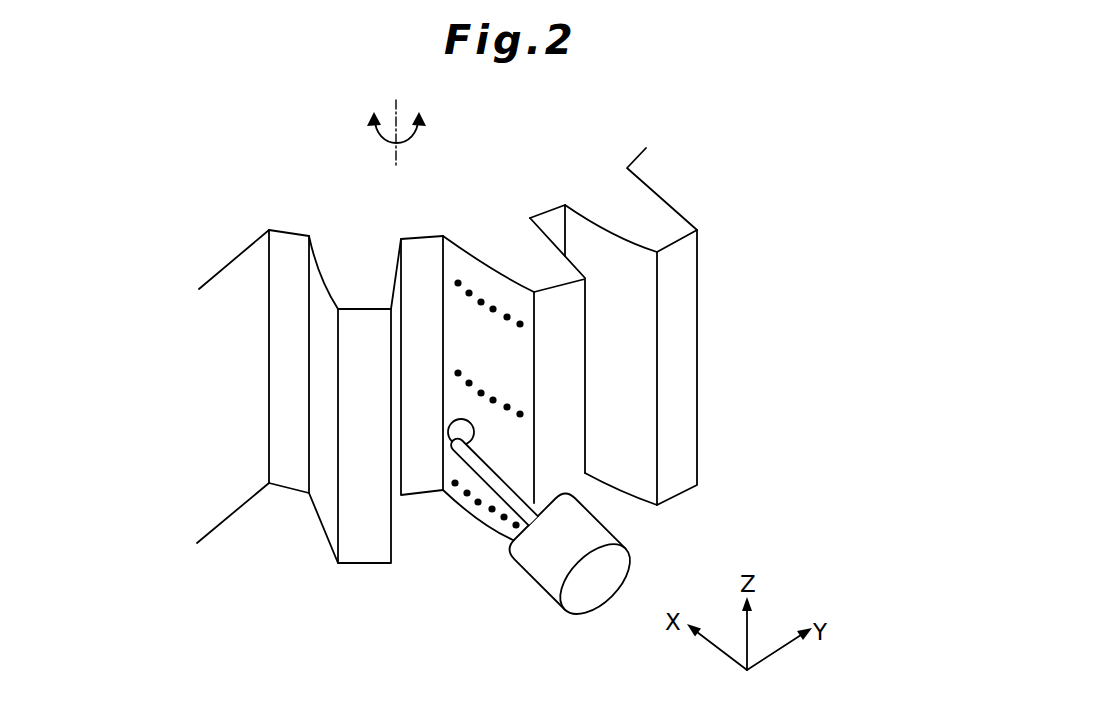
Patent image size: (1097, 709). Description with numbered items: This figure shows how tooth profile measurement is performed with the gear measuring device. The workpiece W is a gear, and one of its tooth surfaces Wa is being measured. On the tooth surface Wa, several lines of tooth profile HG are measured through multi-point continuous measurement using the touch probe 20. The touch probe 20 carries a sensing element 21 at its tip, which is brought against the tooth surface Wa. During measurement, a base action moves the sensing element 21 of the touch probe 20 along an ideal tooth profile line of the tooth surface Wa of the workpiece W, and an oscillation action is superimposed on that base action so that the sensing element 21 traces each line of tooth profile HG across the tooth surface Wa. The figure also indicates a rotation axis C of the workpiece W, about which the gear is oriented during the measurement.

The workpiece W is at (491, 355).
The tooth surface Wa is at (490, 282).
The tooth profile HG is at (495, 507).
The touch probe 20 is at (540, 590).
The sensing element 21 is at (450, 441).
The rotation axis C is at (396, 119).